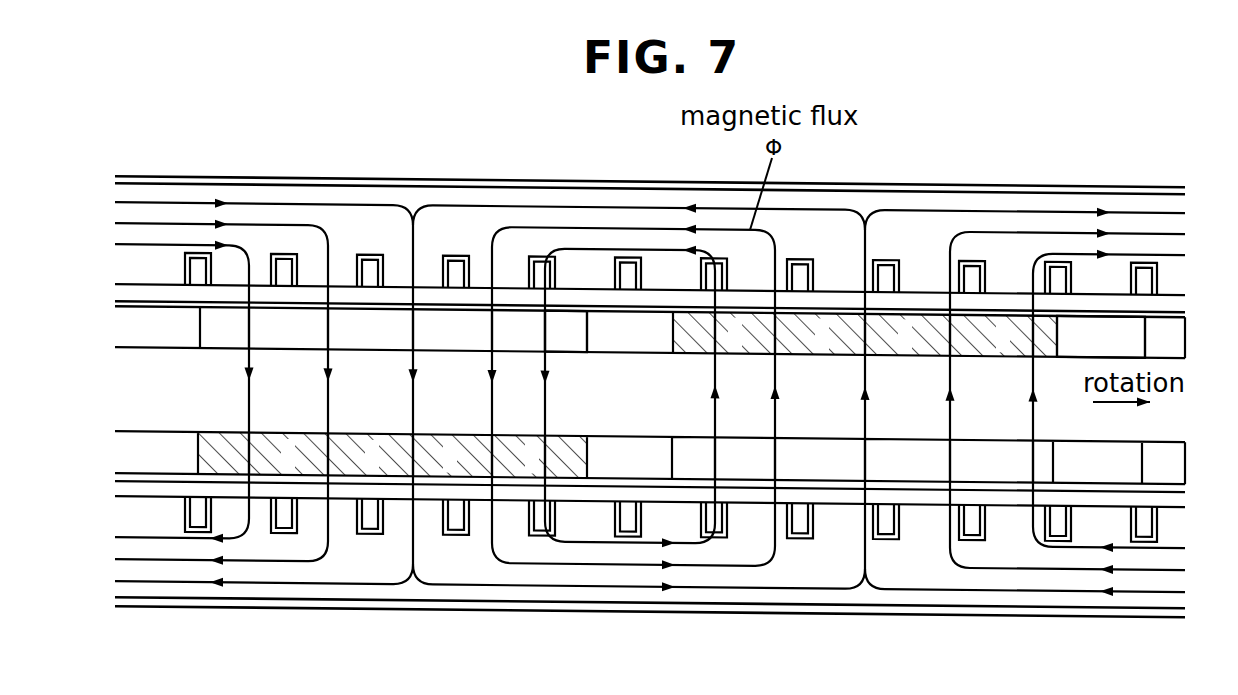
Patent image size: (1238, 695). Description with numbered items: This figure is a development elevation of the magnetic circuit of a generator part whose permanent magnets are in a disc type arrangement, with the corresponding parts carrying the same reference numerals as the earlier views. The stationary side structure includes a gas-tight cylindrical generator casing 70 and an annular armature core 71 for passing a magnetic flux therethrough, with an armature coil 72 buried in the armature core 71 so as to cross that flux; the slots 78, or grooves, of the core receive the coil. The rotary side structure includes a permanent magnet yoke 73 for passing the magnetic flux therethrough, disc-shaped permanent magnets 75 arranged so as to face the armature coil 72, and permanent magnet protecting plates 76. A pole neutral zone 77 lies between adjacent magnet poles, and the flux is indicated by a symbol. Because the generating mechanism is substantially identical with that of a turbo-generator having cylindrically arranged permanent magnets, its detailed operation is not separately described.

The generator casing 70 is at (280, 178).
The annular armature core 71 is at (980, 200).
The armature coil 72 is at (1153, 257).
The permanent magnet yoke 73 is at (688, 415).
The permanent magnets 75 is at (571, 328).
The permanent magnet protecting plates 76 is at (312, 303).
The pole neutral zone 77 is at (1100, 332).
The slots 78 is at (815, 260).